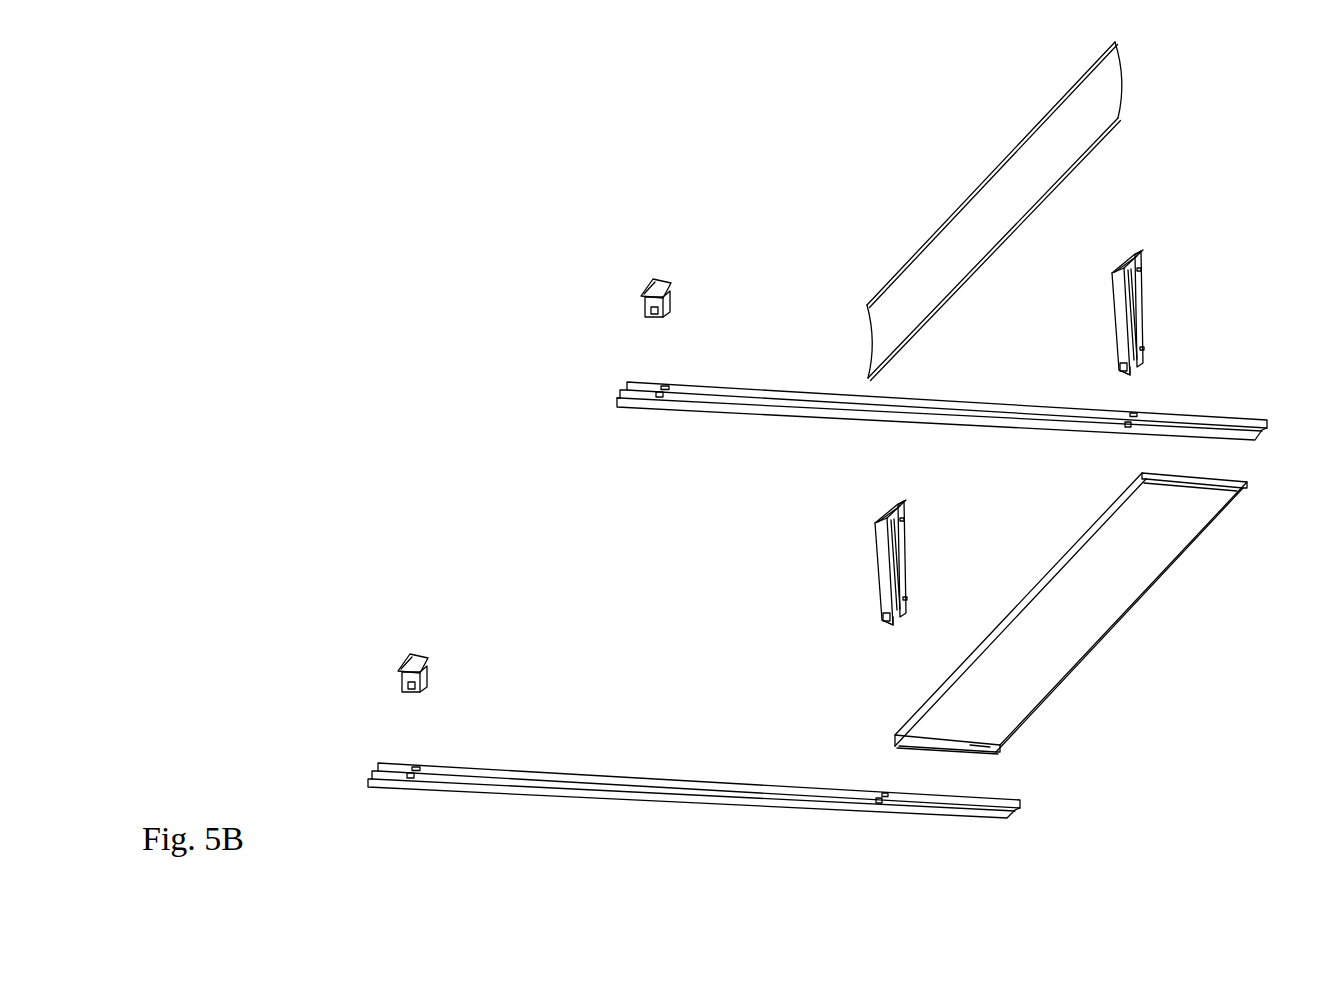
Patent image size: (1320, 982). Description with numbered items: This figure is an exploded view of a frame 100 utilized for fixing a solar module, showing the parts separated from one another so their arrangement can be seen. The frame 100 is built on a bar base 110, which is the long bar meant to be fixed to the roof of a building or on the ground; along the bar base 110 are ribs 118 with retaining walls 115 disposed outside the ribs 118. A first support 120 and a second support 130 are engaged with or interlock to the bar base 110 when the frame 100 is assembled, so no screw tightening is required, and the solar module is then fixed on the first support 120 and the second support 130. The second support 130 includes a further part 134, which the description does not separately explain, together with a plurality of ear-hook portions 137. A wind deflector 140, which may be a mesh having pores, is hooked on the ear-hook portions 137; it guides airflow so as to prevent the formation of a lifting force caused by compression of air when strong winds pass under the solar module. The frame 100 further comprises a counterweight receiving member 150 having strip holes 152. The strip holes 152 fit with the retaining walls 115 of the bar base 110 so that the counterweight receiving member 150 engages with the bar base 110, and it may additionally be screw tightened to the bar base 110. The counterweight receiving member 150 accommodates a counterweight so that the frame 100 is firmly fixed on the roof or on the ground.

The frame 100 is at (418, 68).
The bar base 110 is at (762, 818).
The retaining walls 115 is at (1020, 803).
The ribs 118 is at (993, 807).
The first support 120 is at (425, 651).
The second support 130 is at (883, 533).
The bracket plate 134 is at (883, 588).
The ear-hook portions 137 is at (902, 522).
The wind deflector 140 is at (1002, 185).
The counterweight receiving member 150 is at (1071, 613).
The strip holes 152 is at (976, 739).